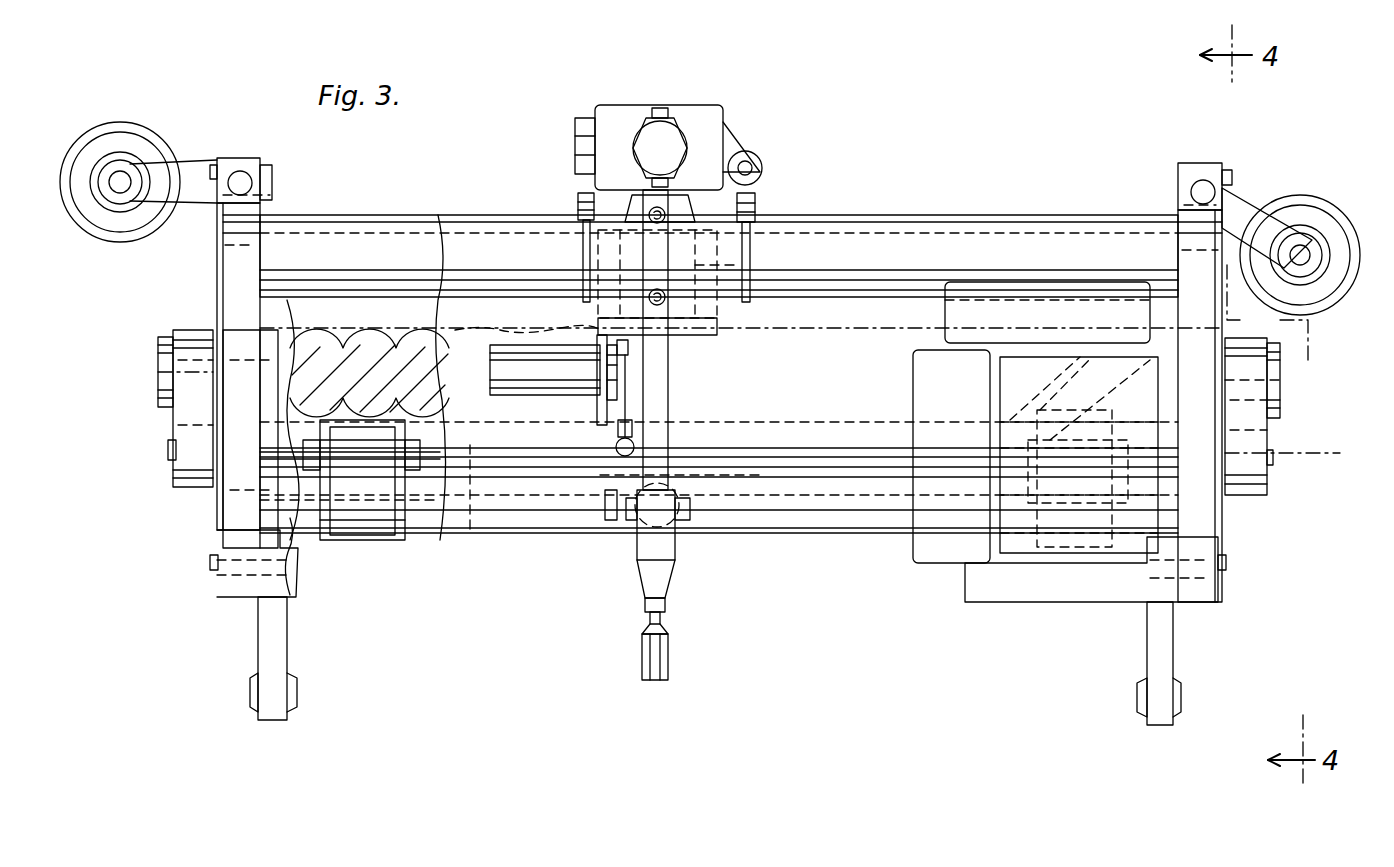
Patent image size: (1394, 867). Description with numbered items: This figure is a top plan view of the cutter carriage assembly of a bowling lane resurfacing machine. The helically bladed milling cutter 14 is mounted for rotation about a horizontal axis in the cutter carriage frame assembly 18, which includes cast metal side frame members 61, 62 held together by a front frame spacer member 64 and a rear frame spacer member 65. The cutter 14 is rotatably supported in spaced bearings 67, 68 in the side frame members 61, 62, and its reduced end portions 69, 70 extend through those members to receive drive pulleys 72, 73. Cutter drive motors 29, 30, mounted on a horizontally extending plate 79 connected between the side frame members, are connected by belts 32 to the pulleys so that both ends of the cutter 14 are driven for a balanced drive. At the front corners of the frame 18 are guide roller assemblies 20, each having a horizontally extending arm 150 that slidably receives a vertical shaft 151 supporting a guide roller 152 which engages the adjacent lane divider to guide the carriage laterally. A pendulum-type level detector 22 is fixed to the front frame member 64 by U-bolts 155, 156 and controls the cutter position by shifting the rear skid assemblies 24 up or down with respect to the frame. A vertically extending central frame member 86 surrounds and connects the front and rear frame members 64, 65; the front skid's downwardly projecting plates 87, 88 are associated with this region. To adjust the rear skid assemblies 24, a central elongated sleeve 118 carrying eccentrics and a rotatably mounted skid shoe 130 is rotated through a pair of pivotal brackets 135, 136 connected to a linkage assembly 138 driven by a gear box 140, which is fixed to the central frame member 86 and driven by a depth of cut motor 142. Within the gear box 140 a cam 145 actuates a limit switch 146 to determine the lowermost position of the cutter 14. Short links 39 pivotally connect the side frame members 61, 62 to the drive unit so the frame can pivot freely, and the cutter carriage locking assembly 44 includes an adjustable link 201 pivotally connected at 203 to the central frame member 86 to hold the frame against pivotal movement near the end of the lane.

The cutter 14 is at (380, 345).
The cutter carriage frame assembly 18 is at (1045, 192).
The guide roller assemblies 20 is at (1355, 210).
The level detector 22 is at (748, 134).
The rear skid assemblies 24 is at (360, 545).
The cutter drive motor 29 is at (290, 545).
The cutter drive motor 30 is at (1022, 548).
The belts 32 is at (185, 428).
The links 39 is at (274, 640).
The cutter carriage locking assembly 44 is at (682, 612).
The side frame member 61 is at (237, 252).
The side frame member 62 is at (1190, 225).
The front frame spacer member 64 is at (935, 228).
The rear frame spacer member 65 is at (843, 522).
The bearing 67 is at (232, 330).
The bearing 68 is at (1198, 360).
The reduced end portion 69 is at (175, 388).
The reduced end portion 70 is at (1262, 375).
The drive pulley 72 is at (165, 366).
The drive pulley 73 is at (1280, 400).
The horizontally extending plate 79 is at (965, 588).
The vertically extending frame member 86 is at (668, 362).
The downwardly projecting plate 87 is at (612, 262).
The downwardly projecting plate 88 is at (738, 262).
The central elongated sleeve 118 is at (480, 492).
The skid shoe 130 is at (398, 540).
The bracket 135 is at (612, 500).
The bracket 136 is at (668, 482).
The linkage assembly 138 is at (612, 440).
The gear box 140 is at (600, 345).
The depth of cut motor 142 is at (510, 345).
The cam 145 is at (625, 380).
The limit switch 146 is at (625, 348).
The horizontally extending arm 150 is at (1245, 215).
The vertical shaft 151 is at (1300, 250).
The guide roller 152 is at (1325, 298).
The U-bolt 155 is at (582, 240).
The U-bolt 156 is at (746, 242).
The adjustable link 201 is at (644, 658).
The pivotal connection 203 is at (690, 510).